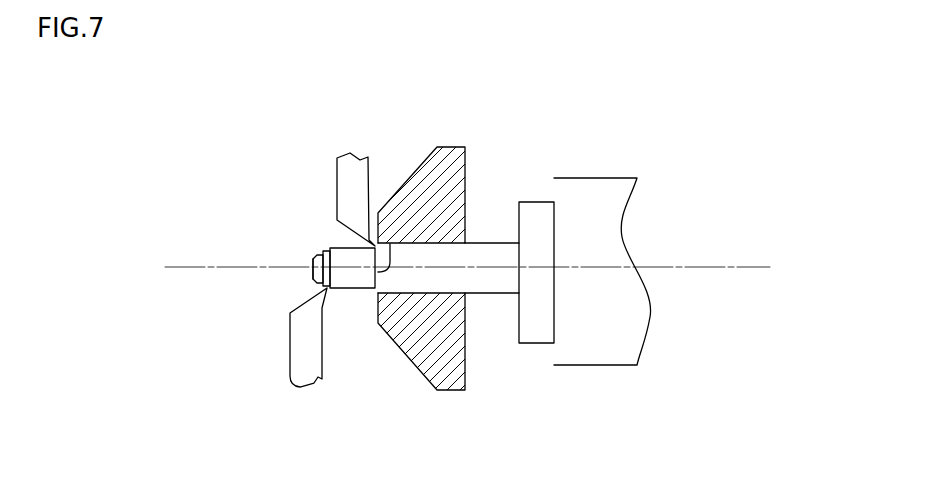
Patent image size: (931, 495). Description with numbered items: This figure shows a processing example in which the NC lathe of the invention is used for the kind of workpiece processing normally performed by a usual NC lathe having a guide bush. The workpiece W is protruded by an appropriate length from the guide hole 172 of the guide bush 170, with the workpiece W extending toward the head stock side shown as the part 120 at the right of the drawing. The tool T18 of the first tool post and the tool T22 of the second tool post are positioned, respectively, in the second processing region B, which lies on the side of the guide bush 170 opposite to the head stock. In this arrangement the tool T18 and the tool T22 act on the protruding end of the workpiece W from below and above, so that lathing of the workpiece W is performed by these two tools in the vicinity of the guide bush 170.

The guide hole 172 is at (372, 270).
The second processing region B is at (275, 237).
The guide bush 170 is at (466, 146).
The workpiece W is at (488, 242).
The spindle head 120 is at (638, 176).
The tool T22 is at (365, 158).
The tool T18 is at (310, 356).